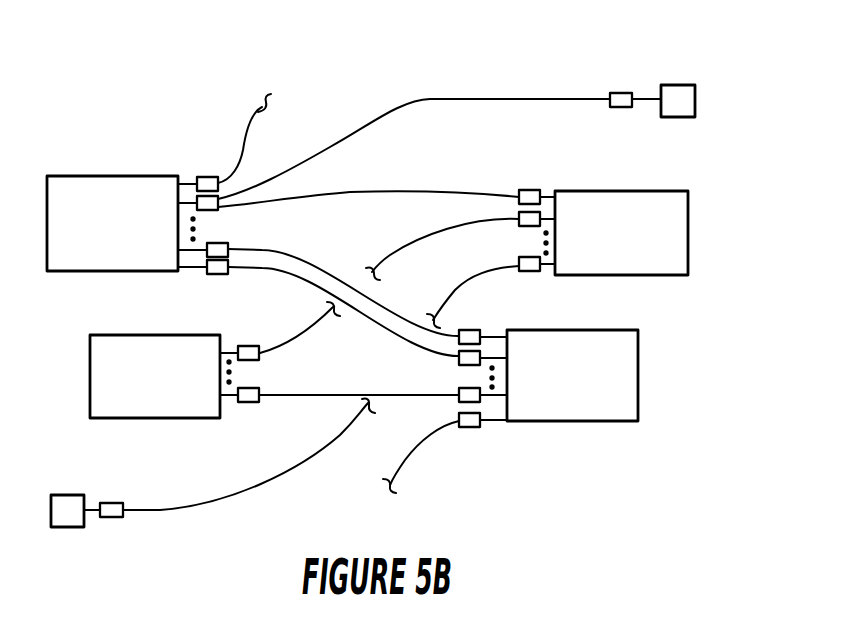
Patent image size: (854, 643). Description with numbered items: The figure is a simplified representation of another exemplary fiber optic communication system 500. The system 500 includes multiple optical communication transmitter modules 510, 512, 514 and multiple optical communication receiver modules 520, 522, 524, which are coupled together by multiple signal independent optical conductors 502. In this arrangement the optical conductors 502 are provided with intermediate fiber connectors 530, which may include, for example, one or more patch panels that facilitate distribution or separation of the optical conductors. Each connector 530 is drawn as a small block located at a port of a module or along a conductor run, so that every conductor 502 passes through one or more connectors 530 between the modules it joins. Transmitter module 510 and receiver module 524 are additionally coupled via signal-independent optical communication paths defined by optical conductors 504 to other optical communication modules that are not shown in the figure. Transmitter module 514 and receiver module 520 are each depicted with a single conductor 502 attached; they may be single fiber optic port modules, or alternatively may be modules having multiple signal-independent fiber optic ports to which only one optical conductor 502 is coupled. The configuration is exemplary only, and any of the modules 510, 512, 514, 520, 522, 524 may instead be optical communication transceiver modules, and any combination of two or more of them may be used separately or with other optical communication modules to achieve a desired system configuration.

The fiber optic communication system 500 is at (293, 70).
The signal independent optical conductor 502 is at (420, 100).
The optical conductor 504 is at (240, 150).
The optical communication transmitter module 510 is at (133, 231).
The optical communication transmitter module 512 is at (173, 388).
The optical communication transmitter module 514 is at (65, 503).
The optical communication receiver module 520 is at (684, 98).
The optical communication receiver module 522 is at (638, 245).
The optical communication receiver module 524 is at (590, 385).
The intermediate fiber connector 530 is at (204, 203).